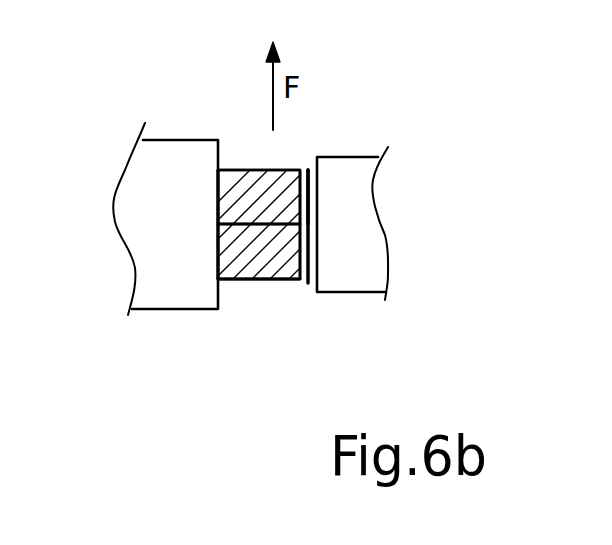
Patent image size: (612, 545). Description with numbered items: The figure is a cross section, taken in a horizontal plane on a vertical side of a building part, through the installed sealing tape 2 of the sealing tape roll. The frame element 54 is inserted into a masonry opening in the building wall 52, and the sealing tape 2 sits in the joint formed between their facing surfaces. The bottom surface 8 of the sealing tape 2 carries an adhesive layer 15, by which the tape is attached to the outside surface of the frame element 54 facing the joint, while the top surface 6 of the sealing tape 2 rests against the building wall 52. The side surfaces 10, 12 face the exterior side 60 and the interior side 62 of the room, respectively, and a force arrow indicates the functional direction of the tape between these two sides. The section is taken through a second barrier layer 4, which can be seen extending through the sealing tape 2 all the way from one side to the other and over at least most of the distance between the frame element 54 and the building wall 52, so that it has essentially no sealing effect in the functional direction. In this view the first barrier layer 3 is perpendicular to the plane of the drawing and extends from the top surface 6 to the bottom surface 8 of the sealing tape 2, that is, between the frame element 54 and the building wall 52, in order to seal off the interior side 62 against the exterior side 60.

The sealing tape 2 is at (279, 298).
The first barrier layer 3 is at (268, 223).
The second barrier layer 4 is at (252, 262).
The top surface 6 is at (217, 243).
The bottom surface 8 is at (305, 191).
The side surface 10 is at (280, 167).
The side surface 12 is at (265, 280).
The adhesive layer 15 is at (313, 263).
The building wall 52 is at (184, 157).
The frame element 54 is at (367, 252).
The exterior side 60 is at (375, 75).
The interior side 62 is at (375, 399).